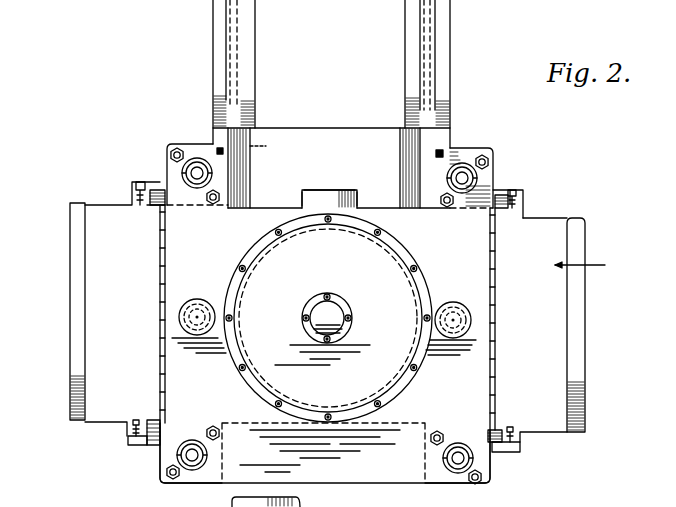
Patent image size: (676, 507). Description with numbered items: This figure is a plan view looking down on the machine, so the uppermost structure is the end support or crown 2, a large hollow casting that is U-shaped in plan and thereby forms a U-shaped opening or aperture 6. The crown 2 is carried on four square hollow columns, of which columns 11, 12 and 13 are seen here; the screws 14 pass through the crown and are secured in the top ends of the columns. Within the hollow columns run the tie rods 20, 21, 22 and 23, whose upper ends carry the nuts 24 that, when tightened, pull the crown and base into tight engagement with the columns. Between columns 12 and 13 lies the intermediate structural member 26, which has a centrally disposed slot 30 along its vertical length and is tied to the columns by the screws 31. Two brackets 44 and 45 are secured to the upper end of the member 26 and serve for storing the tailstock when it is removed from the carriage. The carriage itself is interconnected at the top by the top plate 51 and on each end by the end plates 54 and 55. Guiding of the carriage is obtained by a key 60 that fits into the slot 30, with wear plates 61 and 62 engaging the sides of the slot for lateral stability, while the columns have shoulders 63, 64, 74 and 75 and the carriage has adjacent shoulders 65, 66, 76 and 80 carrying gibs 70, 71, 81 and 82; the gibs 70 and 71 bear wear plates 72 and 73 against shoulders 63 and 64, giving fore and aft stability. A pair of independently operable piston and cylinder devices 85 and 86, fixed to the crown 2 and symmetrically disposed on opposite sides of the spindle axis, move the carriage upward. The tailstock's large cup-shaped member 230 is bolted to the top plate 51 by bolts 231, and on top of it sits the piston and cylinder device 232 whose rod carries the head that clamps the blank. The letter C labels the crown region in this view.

The end support or crown 2 is at (493, 240).
The U-shaped opening or aperture 6 is at (430, 245).
The column 11 is at (482, 490).
The column 12 is at (180, 128).
The column 13 is at (480, 150).
The screws 14 is at (492, 162).
The tie rod 20 is at (193, 462).
The tie rod 21 is at (458, 463).
The tie rod 22 is at (190, 168).
The tie rod 23 is at (470, 180).
The nuts 24 is at (196, 156).
The intermediate structural member 26 is at (322, 128).
The slot 30 is at (339, 195).
The screws 31 is at (266, 146).
The bracket 44 is at (213, 43).
The bracket 45 is at (450, 50).
The top plate 51 is at (541, 342).
The end plate 54 is at (72, 350).
The end plate 55 is at (580, 340).
The key 60 is at (313, 190).
The wear plate 61 is at (302, 195).
The wear plate 62 is at (358, 195).
The shoulder 63 is at (158, 205).
The shoulder 64 is at (510, 208).
The shoulder 65 is at (137, 195).
The shoulder 66 is at (524, 206).
The gib 70 is at (135, 182).
The gib 71 is at (524, 194).
The wear plate 72 is at (167, 188).
The wear plate 73 is at (497, 207).
The shoulder 74 is at (152, 420).
The shoulder 75 is at (493, 430).
The shoulder 76 is at (127, 430).
The shoulder 80 is at (521, 438).
The gib 81 is at (128, 440).
The gib 82 is at (521, 448).
The piston and cylinder device 85 is at (180, 306).
The piston and cylinder device 86 is at (470, 308).
The cup-shaped member 230 is at (314, 282).
The bolts 231 is at (278, 233).
The piston and cylinder device 232 is at (305, 312).
The cover C is at (585, 269).